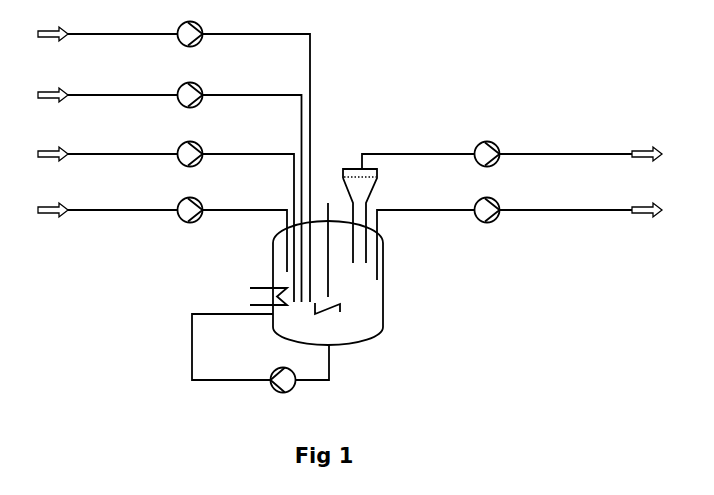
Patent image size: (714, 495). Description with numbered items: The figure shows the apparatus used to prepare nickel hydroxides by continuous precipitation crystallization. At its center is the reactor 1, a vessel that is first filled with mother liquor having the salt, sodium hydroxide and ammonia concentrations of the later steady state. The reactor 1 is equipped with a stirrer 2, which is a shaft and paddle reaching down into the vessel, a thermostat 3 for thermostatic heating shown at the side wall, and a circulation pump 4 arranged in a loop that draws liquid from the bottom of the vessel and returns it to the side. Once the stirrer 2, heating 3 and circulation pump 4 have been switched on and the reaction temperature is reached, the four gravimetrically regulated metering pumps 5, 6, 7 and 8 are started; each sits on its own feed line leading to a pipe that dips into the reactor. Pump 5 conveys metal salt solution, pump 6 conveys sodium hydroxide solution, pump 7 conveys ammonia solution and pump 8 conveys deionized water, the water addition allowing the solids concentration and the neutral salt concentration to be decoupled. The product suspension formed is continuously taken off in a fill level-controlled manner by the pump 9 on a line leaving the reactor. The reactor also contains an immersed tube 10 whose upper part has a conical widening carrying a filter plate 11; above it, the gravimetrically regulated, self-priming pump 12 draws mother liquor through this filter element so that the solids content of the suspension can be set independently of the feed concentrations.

The reactor 1 is at (320, 283).
The stirrer 2 is at (327, 258).
The thermostat 3 is at (268, 296).
The circulation pump 4 is at (260, 364).
The metering pump 5 is at (174, 162).
The metering pump 6 is at (170, 193).
The metering pump 7 is at (166, 222).
The metering pump 8 is at (162, 235).
The pump 9 is at (519, 239).
The immersed tube 10 is at (342, 240).
The filter plate 11 is at (360, 216).
The pump 12 is at (512, 165).